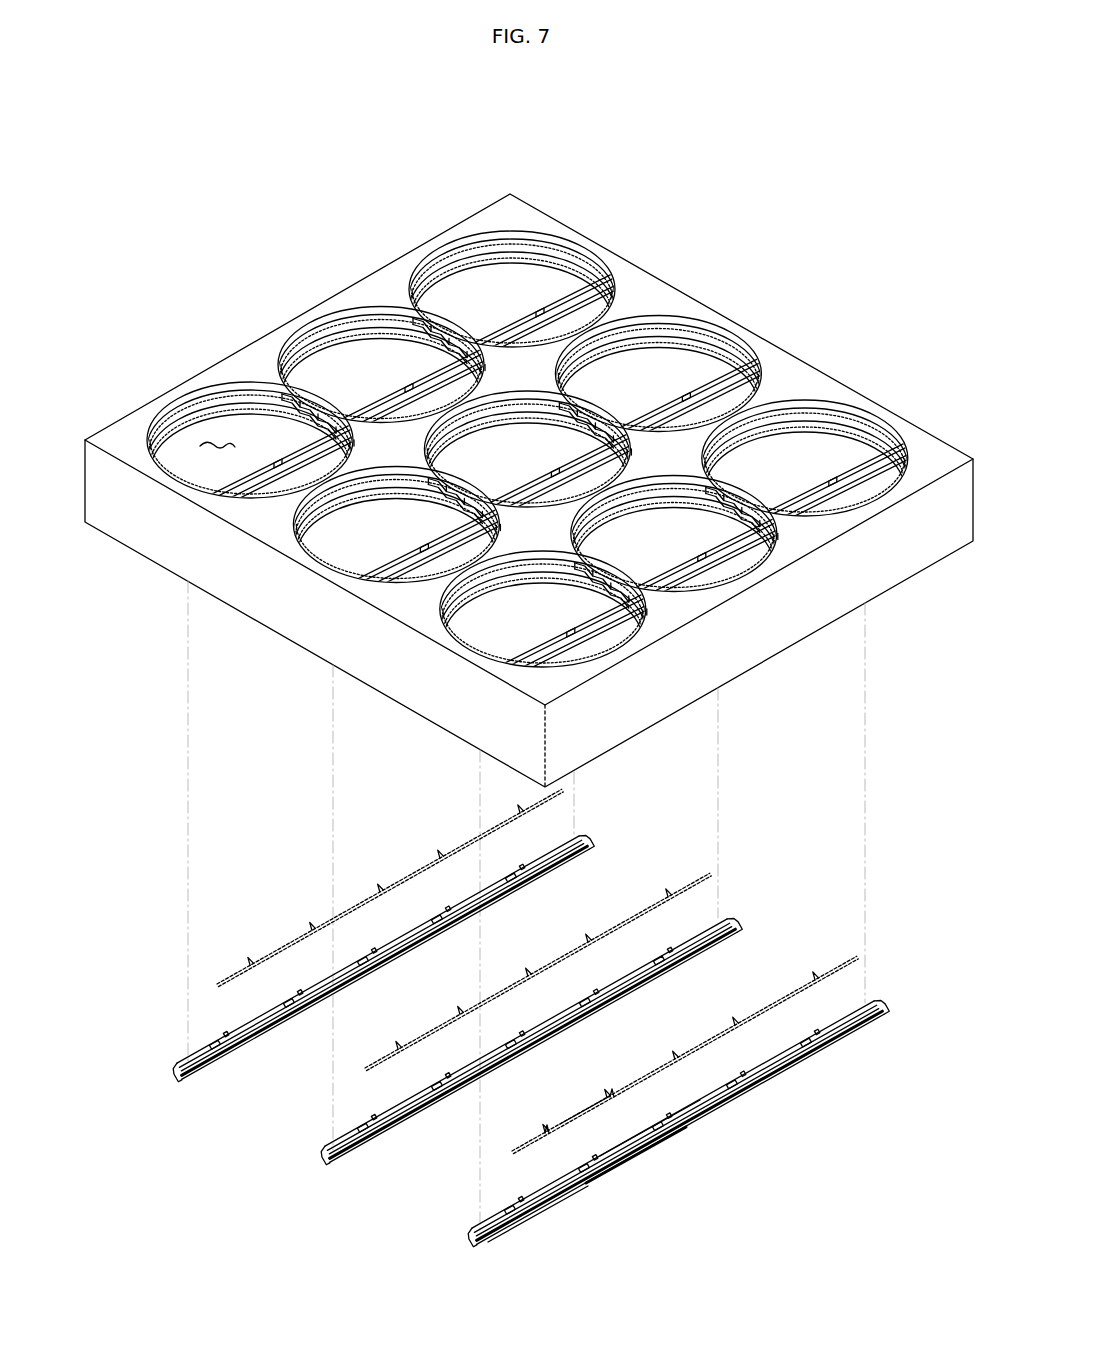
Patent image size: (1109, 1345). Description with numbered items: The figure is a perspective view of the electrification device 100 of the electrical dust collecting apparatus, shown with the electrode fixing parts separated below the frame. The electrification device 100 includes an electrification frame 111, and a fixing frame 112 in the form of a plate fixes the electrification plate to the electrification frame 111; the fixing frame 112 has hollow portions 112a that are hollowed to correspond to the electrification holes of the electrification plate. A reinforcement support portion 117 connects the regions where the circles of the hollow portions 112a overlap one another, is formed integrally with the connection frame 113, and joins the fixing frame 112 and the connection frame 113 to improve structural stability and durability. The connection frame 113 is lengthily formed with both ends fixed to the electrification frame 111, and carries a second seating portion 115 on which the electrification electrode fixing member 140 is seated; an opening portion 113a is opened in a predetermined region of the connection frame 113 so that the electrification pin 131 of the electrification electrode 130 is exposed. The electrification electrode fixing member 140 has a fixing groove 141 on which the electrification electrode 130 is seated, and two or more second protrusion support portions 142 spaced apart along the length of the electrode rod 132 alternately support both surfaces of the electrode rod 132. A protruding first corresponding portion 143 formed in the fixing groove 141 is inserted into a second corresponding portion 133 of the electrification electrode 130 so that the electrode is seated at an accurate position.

The electrification device 100 is at (634, 181).
The electrification frame 111 is at (177, 530).
The fixing frame 112 is at (123, 435).
The hollow portion 112a is at (220, 442).
The connection frame 113 is at (288, 408).
The opening portion 113a is at (318, 482).
The second seating portion 115 is at (386, 395).
The reinforcement support portion 117 is at (330, 398).
The electrification electrode 130 is at (863, 945).
The electrification pin 131 is at (548, 1128).
The electrode rod 132 is at (582, 1114).
The second corresponding portion 133 is at (612, 1094).
The electrification electrode fixing member 140 is at (885, 993).
The fixing groove 141 is at (660, 1147).
The second protrusion support portion 142 is at (543, 1212).
The first corresponding portion 143 is at (632, 1168).